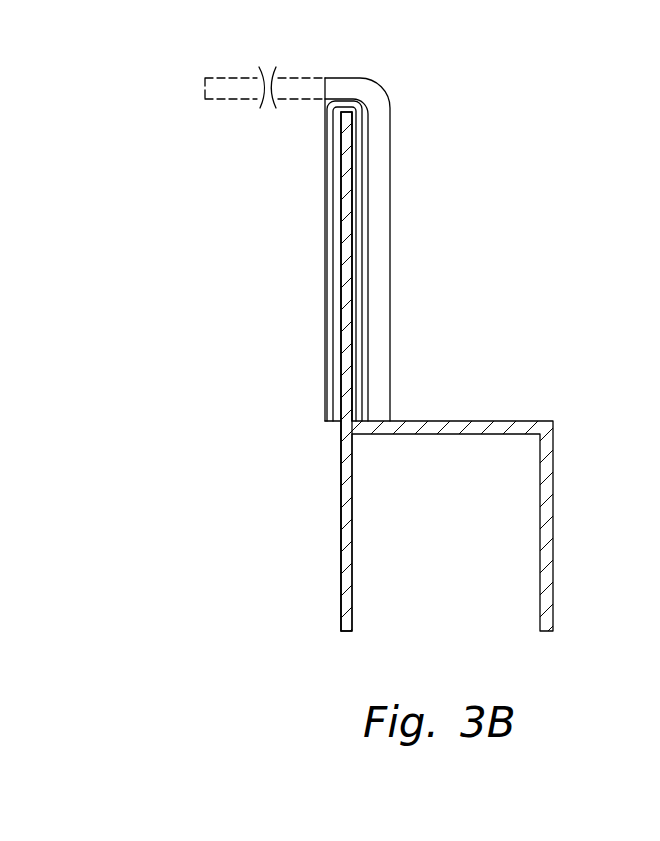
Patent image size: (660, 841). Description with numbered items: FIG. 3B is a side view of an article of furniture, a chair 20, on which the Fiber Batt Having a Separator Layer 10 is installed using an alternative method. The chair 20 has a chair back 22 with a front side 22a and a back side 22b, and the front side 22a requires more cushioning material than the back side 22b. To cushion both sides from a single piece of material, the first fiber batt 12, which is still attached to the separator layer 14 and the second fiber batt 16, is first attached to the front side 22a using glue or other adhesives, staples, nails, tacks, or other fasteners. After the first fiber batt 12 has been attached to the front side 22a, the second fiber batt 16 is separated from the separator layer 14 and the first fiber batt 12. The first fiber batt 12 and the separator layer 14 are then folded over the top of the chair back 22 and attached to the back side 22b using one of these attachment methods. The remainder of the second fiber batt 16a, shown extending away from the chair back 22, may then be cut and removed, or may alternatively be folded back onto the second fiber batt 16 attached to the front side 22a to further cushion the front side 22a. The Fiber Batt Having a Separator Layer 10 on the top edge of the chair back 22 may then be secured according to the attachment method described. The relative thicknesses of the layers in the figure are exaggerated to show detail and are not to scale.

The Fiber Batt Having a Separator Layer 10 is at (357, 224).
The first fiber batt 12 is at (337, 203).
The separator layer 14 is at (328, 260).
The second fiber batt 16 is at (378, 218).
The remainder of the second fiber batt 16a is at (292, 76).
The chair 20 is at (330, 375).
The chair back 22 is at (350, 349).
The front side 22a is at (353, 303).
The back side 22b is at (340, 320).